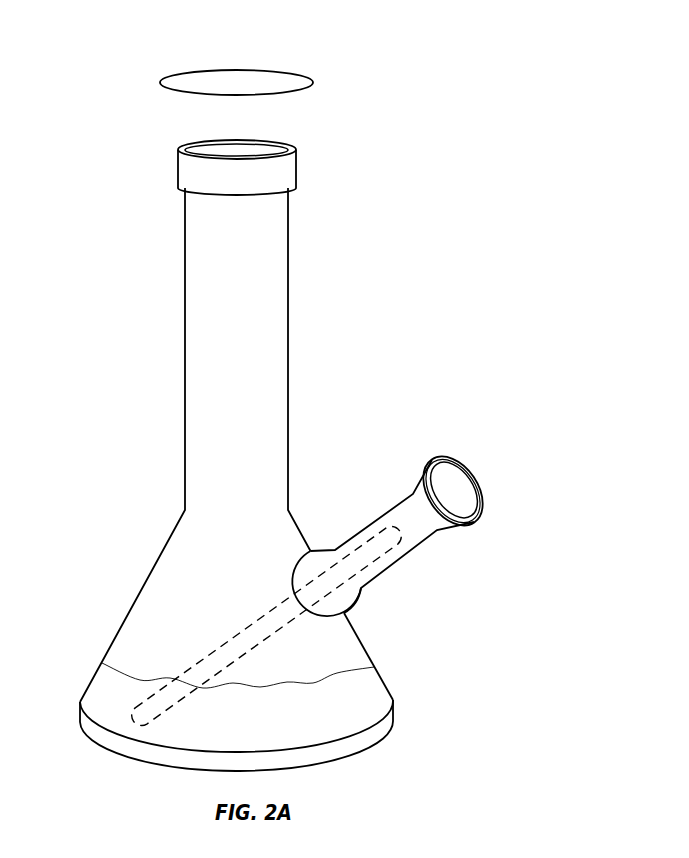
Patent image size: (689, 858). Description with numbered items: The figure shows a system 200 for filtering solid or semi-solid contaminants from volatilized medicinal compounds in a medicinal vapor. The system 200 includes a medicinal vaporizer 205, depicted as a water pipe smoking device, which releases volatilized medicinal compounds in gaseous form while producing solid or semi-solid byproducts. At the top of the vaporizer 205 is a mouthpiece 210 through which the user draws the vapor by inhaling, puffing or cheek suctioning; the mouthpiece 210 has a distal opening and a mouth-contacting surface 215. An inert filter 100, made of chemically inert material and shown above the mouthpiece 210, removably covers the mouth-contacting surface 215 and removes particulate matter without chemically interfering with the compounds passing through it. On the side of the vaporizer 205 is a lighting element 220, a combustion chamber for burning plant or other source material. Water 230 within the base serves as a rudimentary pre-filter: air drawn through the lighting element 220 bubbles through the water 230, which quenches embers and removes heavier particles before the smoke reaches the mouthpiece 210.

The inert filter 100 is at (294, 61).
The system 200 is at (499, 156).
The medicinal vaporizer 205 is at (128, 467).
The mouthpiece 210 is at (303, 141).
The mouth-contacting surface 215 is at (178, 147).
The lighting element 220 is at (439, 520).
The water 230 is at (360, 707).